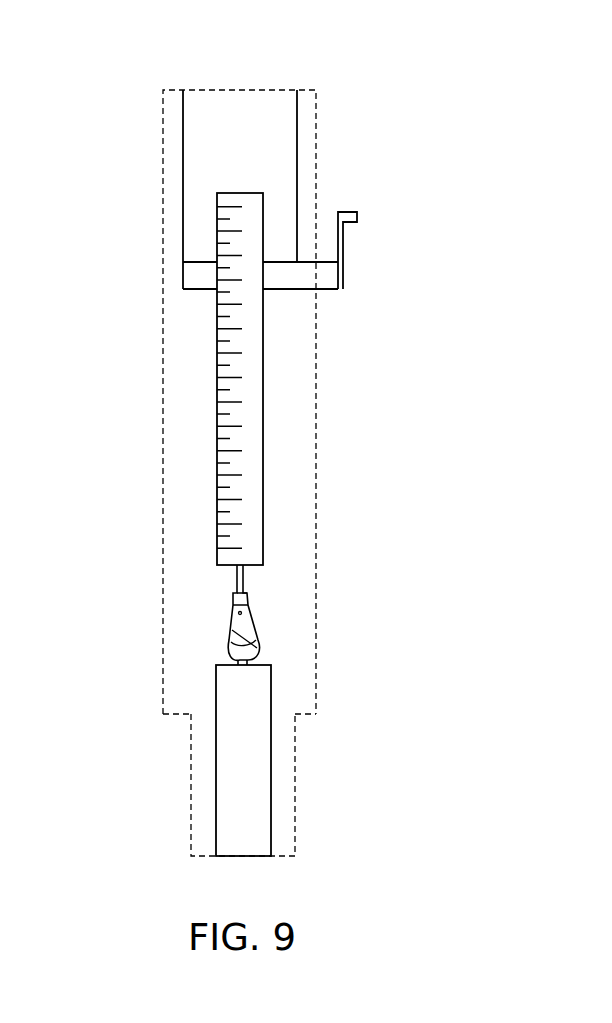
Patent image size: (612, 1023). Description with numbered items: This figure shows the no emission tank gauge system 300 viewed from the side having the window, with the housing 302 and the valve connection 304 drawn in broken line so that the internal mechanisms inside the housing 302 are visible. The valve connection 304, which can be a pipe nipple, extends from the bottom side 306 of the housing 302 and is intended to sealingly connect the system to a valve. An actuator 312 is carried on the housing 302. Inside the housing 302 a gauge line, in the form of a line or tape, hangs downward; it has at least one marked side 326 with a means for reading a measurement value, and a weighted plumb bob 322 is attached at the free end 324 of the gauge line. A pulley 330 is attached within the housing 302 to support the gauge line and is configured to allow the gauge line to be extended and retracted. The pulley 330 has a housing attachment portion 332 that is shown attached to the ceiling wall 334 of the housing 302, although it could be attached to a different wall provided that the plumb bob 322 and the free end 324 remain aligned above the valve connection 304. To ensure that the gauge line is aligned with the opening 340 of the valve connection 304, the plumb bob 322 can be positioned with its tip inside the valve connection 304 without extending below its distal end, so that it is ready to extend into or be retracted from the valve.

The no emission tank gauge system 300 is at (132, 128).
The housing 302 is at (162, 362).
The valve connection 304 is at (295, 825).
The bottom side 306 is at (178, 717).
The actuator 312 is at (347, 240).
The plumb bob 322 is at (252, 785).
The free end 324 is at (263, 563).
The marked side 326 is at (252, 515).
The pulley 330 is at (282, 291).
The housing attachment portion 332 is at (185, 108).
The ceiling wall 334 is at (245, 90).
The opening 340 is at (203, 715).